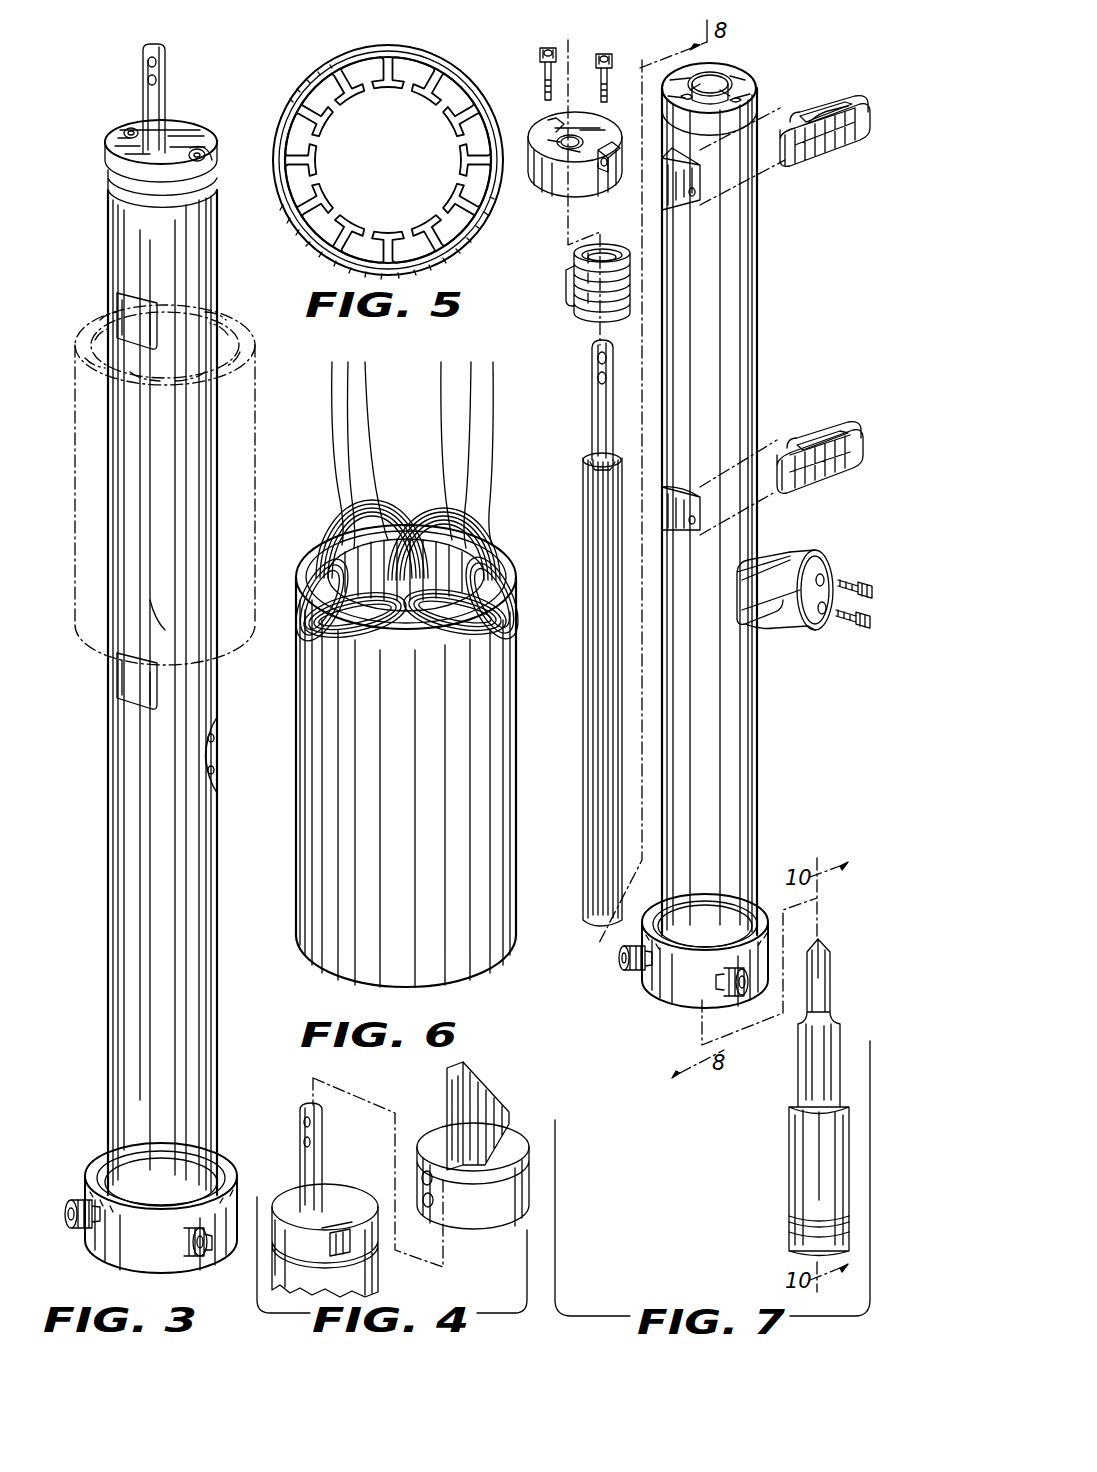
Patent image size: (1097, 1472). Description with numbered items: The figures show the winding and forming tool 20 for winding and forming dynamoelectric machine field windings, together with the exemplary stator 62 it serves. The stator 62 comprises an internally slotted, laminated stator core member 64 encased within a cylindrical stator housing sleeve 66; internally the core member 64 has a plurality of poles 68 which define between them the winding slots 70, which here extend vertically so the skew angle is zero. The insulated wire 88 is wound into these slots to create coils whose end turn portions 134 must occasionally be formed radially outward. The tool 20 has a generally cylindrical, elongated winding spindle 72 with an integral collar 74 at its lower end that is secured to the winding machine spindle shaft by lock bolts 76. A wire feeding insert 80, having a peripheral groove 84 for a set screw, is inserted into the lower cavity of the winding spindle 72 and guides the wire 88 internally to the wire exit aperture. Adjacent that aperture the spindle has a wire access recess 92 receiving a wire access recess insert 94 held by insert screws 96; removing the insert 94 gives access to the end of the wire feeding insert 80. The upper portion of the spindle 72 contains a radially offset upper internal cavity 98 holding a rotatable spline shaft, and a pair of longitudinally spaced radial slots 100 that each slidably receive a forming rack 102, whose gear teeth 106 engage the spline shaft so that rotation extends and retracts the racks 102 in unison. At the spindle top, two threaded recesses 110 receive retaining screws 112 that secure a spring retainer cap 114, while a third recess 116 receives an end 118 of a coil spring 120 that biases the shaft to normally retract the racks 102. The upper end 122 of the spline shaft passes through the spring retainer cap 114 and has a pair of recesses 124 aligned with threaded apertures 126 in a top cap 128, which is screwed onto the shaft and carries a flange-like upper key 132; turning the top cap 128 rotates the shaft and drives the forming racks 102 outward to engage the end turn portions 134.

In FIG. 3, the winding and forming tool 20 is at (80, 842).
In FIG. 3, the stator 62 is at (75, 450).
In FIG. 5, the stator 62 is at (347, 41).
In FIG. 6, the stator 62 is at (325, 938).
In FIG. 3, the stator core member 64 is at (292, 622).
In FIG. 5, the stator core member 64 is at (322, 88).
In FIG. 6, the stator core member 64 is at (325, 590).
In FIG. 5, the stator housing sleeve 66 is at (275, 210).
In FIG. 5, the poles 68 is at (430, 88).
In FIG. 5, the winding slots 70 is at (376, 62).
In FIG. 3, the winding spindle 72 is at (112, 1020).
In FIG. 7, the winding spindle 72 is at (757, 792).
In FIG. 3, the collar 74 is at (118, 1245).
In FIG. 7, the collar 74 is at (668, 996).
In FIG. 3, the lock bolts 76 is at (66, 1212).
In FIG. 7, the lock bolts 76 is at (683, 971).
In FIG. 7, the wire feeding insert 80 is at (792, 1120).
In FIG. 7, the peripheral groove 84 is at (789, 1220).
In FIG. 6, the insulated wire 88 is at (446, 440).
In FIG. 7, the wire access recess 92 is at (748, 562).
In FIG. 3, the wire access recess insert 94 is at (216, 772).
In FIG. 7, the wire access recess insert 94 is at (818, 560).
In FIG. 7, the insert screws 96 is at (870, 622).
In FIG. 7, the upper internal cavity 98 is at (728, 74).
In FIG. 7, the slots 100 is at (684, 200).
In FIG. 3, the forming racks 102 is at (117, 318).
In FIG. 7, the forming racks 102 is at (845, 150).
In FIG. 7, the gear teeth 106 is at (835, 108).
In FIG. 7, the threaded recesses 110 is at (712, 64).
In FIG. 3, the retaining screws 112 is at (126, 132).
In FIG. 7, the retaining screws 112 is at (592, 34).
In FIG. 3, the spring retainer cap 114 is at (165, 125).
In FIG. 7, the spring retainer cap 114 is at (550, 180).
In FIG. 7, the third recess 116 is at (700, 98).
In FIG. 7, the end of coil spring 118 is at (572, 278).
In FIG. 7, the coil spring 120 is at (576, 324).
In FIG. 3, the upper end of spline shaft 122 is at (160, 50).
In FIG. 4, the upper end of spline shaft 122 is at (320, 1170).
In FIG. 7, the upper end of spline shaft 122 is at (592, 416).
In FIG. 3, the recesses 124 is at (148, 62).
In FIG. 7, the recesses 124 is at (598, 358).
In FIG. 4, the threaded apertures 126 is at (422, 1182).
In FIG. 4, the top cap 128 is at (518, 1134).
In FIG. 4, the upper key 132 is at (465, 1088).
In FIG. 6, the end turn portions 134 is at (484, 530).